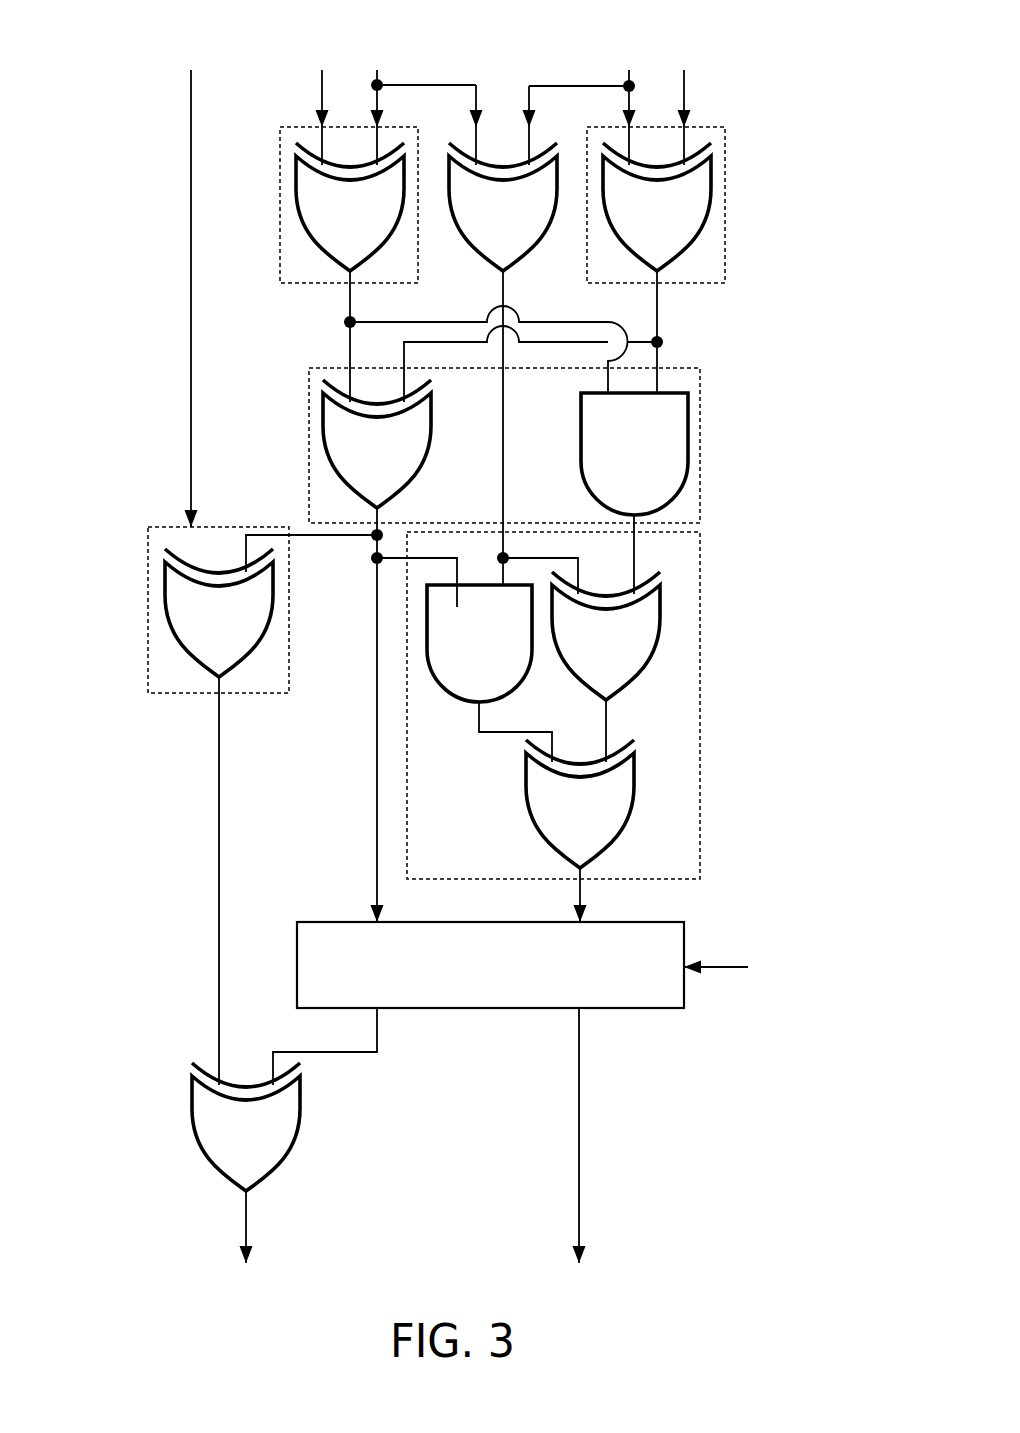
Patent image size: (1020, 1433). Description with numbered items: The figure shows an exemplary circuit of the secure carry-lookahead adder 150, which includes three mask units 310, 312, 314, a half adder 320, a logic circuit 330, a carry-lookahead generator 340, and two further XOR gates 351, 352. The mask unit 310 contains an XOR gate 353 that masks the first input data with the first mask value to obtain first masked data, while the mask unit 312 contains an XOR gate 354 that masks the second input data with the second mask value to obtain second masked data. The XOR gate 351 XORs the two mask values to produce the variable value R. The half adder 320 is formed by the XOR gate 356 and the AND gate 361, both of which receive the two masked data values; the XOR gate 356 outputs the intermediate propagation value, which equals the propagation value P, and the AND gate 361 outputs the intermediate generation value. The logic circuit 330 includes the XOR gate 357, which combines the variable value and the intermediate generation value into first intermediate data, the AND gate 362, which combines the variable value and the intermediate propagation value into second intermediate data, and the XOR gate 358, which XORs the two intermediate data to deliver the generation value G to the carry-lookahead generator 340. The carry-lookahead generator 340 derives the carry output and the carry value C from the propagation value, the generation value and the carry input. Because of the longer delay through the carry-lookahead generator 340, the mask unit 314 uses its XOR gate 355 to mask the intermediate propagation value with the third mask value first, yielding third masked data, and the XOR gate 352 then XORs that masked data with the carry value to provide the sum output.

The secure carry-lookahead adder 150 is at (100, 35).
The mask unit 310 is at (280, 143).
The mask unit 312 is at (725, 170).
The mask unit 314 is at (148, 585).
The half adder 320 is at (700, 412).
The logic circuit 330 is at (700, 660).
The carry-lookahead generator 340 is at (684, 1000).
The XOR gate 351 is at (527, 257).
The XOR gate 352 is at (216, 1150).
The XOR gate 353 is at (313, 240).
The XOR gate 354 is at (705, 228).
The XOR gate 355 is at (184, 648).
The XOR gate 356 is at (336, 470).
The XOR gate 357 is at (660, 600).
The XOR gate 358 is at (634, 772).
The AND gate 361 is at (688, 460).
The AND gate 362 is at (468, 700).